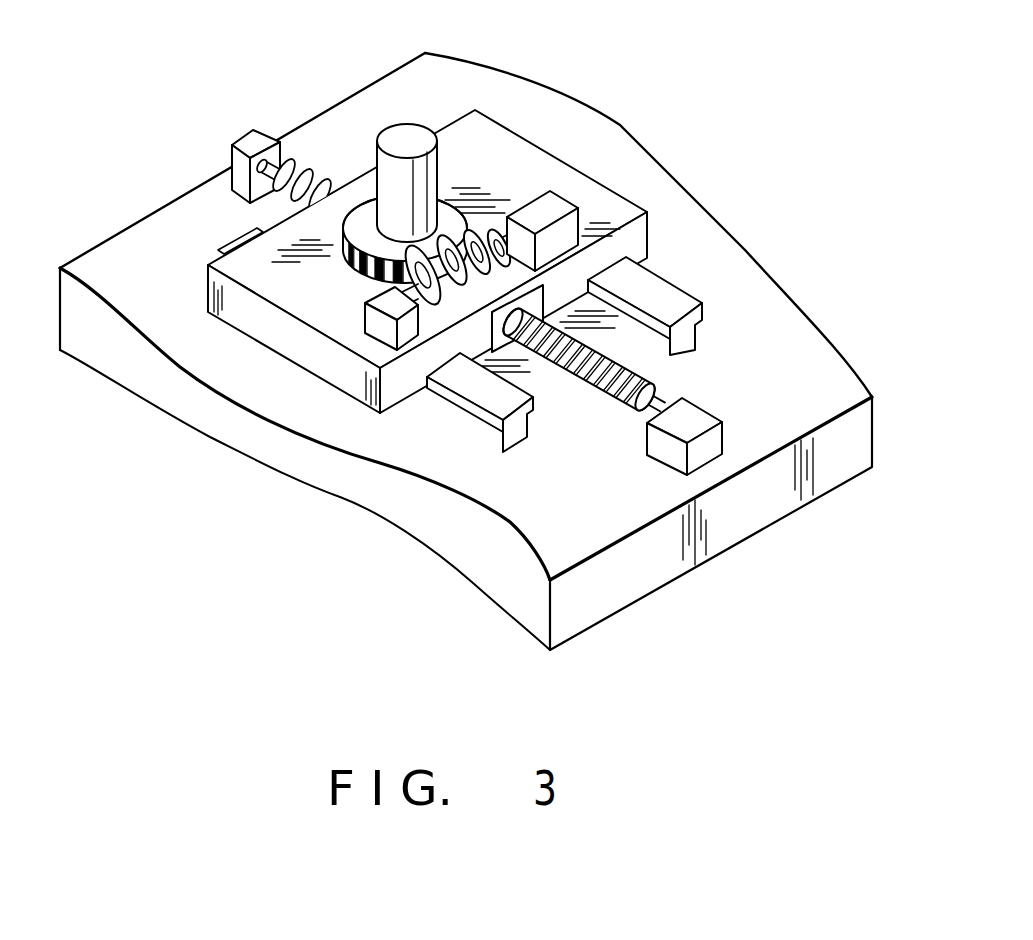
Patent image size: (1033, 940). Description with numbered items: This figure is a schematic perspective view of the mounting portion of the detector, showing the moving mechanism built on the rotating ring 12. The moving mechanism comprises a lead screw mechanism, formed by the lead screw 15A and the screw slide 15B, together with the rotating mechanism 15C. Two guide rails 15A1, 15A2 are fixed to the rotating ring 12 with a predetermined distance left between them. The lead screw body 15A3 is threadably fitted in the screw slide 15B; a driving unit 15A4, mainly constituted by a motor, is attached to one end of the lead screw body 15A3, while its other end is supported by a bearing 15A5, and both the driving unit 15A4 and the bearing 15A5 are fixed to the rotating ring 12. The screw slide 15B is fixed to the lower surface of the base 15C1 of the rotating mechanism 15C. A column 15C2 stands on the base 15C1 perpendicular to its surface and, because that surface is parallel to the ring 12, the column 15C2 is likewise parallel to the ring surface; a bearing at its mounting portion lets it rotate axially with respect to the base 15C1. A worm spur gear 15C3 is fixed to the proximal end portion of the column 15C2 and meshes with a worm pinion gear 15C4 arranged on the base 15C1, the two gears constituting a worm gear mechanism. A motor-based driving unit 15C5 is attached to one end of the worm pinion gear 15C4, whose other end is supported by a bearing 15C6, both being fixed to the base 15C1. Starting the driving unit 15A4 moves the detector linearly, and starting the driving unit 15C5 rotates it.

The rotating ring 12 is at (787, 308).
The lead screw 15A is at (623, 412).
The guide rail 15A1 is at (483, 400).
The guide rail 15A2 is at (665, 302).
The lead screw body 15A3 is at (642, 387).
The driving unit 15A4 is at (692, 430).
The bearing 15A5 is at (252, 137).
The screw slide 15B is at (545, 283).
The rotating mechanism 15C is at (494, 193).
The base 15C1 is at (547, 197).
The column 15C2 is at (430, 185).
The worm spur gear 15C3 is at (363, 238).
The worm pinion gear 15C4 is at (447, 318).
The driving unit 15C5 is at (578, 192).
The bearing 15C6 is at (385, 322).